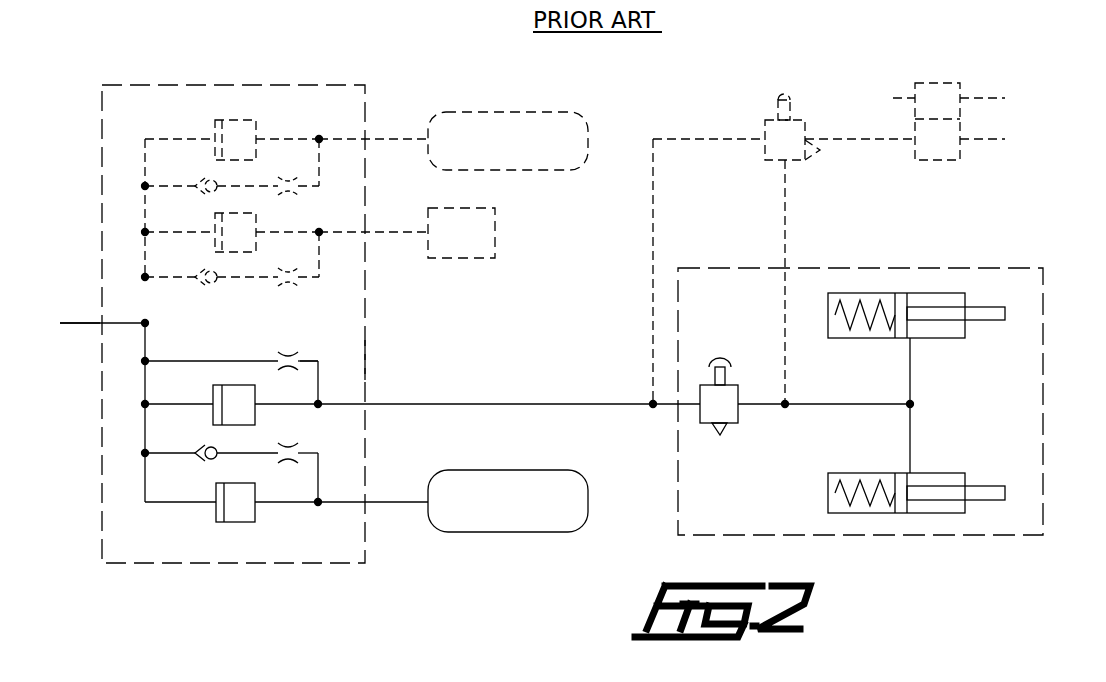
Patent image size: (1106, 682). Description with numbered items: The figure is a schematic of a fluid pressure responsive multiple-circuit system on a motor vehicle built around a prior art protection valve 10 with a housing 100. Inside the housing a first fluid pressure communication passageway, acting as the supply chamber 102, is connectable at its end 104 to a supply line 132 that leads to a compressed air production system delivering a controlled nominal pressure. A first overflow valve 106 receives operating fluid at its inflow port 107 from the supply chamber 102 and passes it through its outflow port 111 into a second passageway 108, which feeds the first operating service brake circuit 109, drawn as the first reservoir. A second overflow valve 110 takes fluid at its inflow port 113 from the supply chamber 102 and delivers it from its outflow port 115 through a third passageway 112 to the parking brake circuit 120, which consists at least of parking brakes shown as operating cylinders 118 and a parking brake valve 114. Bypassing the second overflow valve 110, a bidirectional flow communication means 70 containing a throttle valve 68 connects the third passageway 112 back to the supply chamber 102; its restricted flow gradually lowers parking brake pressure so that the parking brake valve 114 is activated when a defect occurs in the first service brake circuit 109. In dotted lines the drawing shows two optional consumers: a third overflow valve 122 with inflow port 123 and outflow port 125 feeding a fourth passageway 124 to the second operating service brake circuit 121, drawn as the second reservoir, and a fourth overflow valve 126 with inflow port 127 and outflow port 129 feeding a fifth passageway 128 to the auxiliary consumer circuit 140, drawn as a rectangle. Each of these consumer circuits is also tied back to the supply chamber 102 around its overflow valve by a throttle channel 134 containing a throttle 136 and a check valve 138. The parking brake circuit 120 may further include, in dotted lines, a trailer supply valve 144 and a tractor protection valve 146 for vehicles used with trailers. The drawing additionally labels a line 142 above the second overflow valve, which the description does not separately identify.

The protection valve 10 is at (323, 86).
The throttle valve 68 is at (290, 351).
The bidirectional flow communication means 70 is at (317, 356).
The housing 100 is at (348, 363).
The first fluid pressure communication passageway 102 is at (146, 146).
The end of first passageway 104 is at (98, 323).
The first overflow valve 106 is at (245, 523).
The inflow port 107 is at (216, 510).
The second fluid pressure communication passageway 108 is at (348, 502).
The first operating service brake circuit 109 is at (542, 523).
The second overflow valve 110 is at (256, 414).
The outflow port 111 is at (255, 508).
The third fluid pressure communication passageway 112 is at (336, 404).
The inflow port 113 is at (213, 411).
The parking brake valve 114 is at (733, 415).
The outflow port 115 is at (257, 397).
The operating cylinders 118 is at (943, 334).
The parking brake circuit 120 is at (898, 266).
The second operating service brake circuit 121 is at (540, 163).
The third overflow valve 122 is at (246, 120).
The inflow port 123 is at (216, 138).
The fourth fluid pressure communication passageway 124 is at (333, 131).
The outflow port 125 is at (257, 139).
The fourth overflow valve 126 is at (254, 222).
The inflow port 127 is at (215, 238).
The fifth fluid pressure communication passageway 128 is at (332, 232).
The outflow port 129 is at (257, 238).
The supply line 132 is at (83, 325).
The throttle channel 134 is at (168, 187).
The throttle 136 is at (290, 182).
The check valve 138 is at (213, 189).
The auxiliary consumer circuit 140 is at (483, 258).
The bypass passage 142 is at (172, 361).
The trailer supply valve 144 is at (772, 128).
The tractor protection valve 146 is at (942, 92).